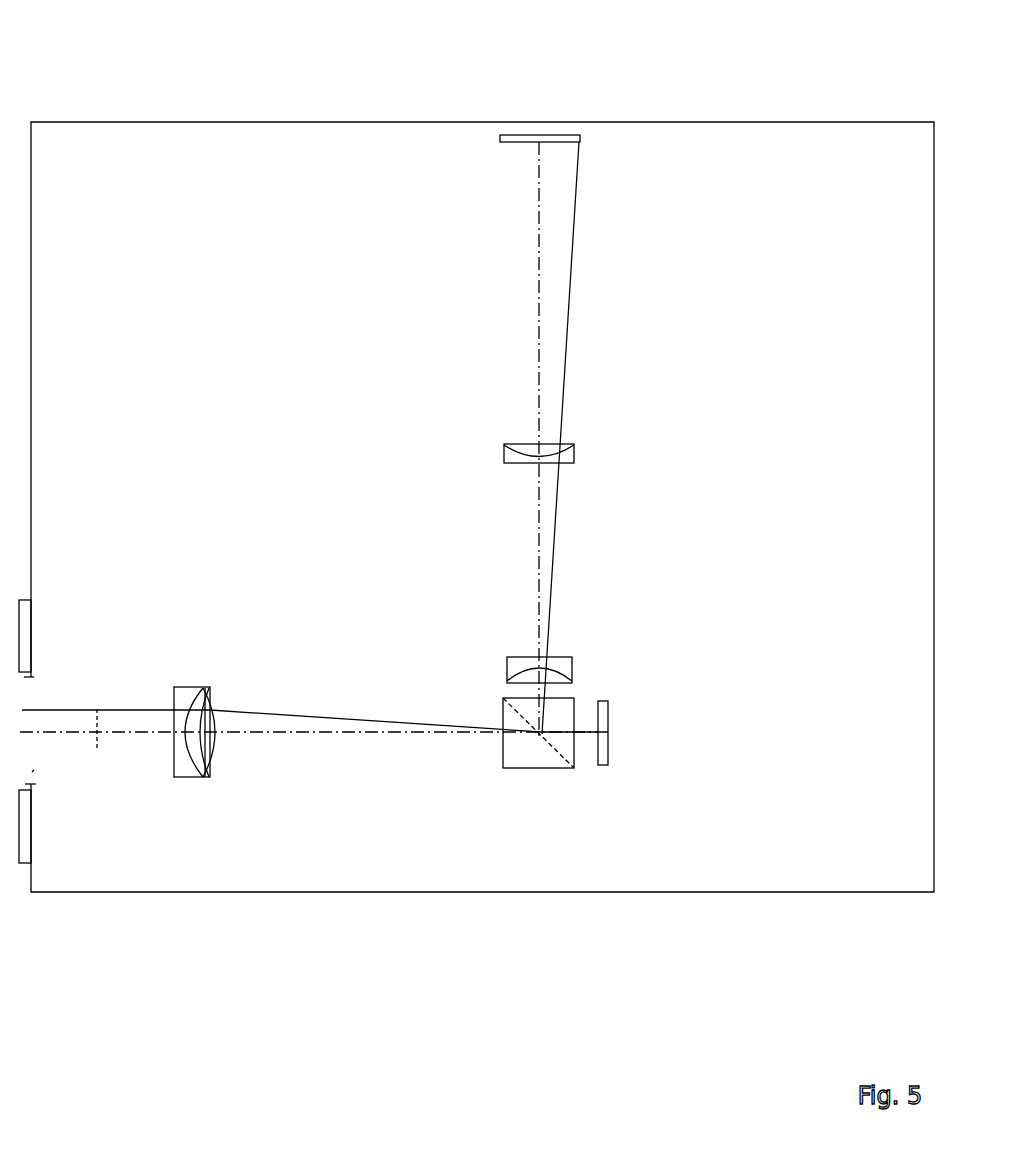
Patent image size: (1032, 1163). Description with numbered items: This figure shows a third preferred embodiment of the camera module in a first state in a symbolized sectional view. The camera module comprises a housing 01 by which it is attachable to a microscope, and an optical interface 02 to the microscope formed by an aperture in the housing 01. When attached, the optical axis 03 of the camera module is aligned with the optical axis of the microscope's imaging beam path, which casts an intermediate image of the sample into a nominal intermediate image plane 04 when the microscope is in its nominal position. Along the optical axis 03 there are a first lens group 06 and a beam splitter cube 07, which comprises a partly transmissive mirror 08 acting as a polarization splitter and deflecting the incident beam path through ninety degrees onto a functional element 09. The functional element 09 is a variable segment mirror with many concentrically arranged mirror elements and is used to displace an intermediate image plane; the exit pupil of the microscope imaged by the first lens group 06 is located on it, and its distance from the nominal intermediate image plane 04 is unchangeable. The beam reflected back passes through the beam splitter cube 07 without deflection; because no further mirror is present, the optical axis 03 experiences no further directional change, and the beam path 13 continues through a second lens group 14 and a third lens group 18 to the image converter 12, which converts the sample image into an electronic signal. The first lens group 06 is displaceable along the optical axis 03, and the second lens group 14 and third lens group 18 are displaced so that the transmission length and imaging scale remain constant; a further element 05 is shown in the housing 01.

The housing 01 is at (98, 892).
The optical interface 02 is at (32, 772).
The optical axis 03 is at (297, 733).
The nominal intermediate image plane 04 is at (97, 750).
The detector 05 is at (23, 863).
The first lens group 06 is at (192, 777).
The beam splitter cube 07 is at (503, 768).
The partly transmissive mirror 08 is at (553, 748).
The functional element 09 is at (605, 765).
The image converter 12 is at (502, 136).
The light beam 13 is at (235, 712).
The second lens group 14 is at (507, 681).
The third lens group 18 is at (506, 444).